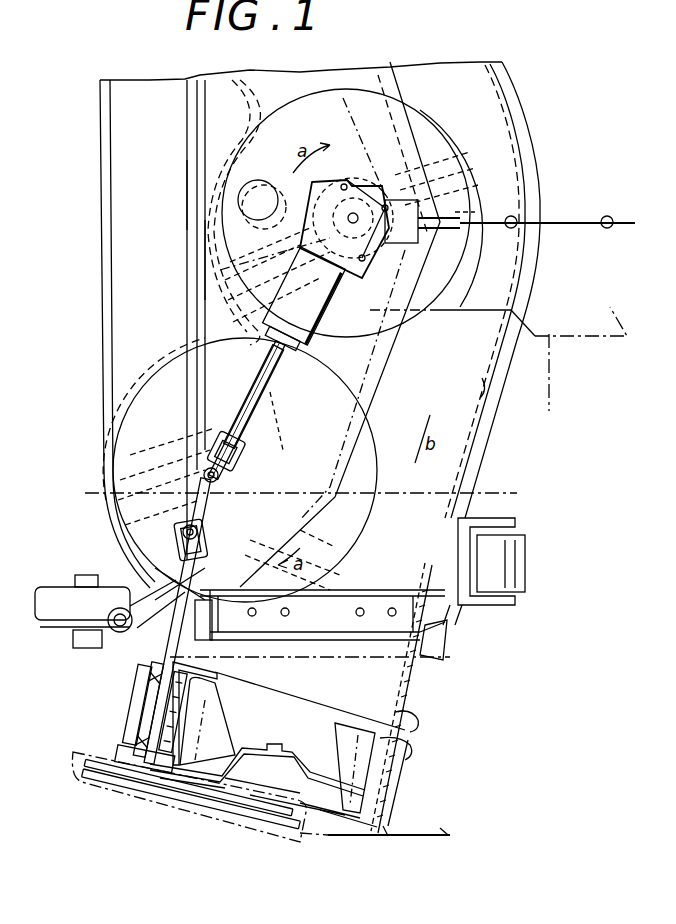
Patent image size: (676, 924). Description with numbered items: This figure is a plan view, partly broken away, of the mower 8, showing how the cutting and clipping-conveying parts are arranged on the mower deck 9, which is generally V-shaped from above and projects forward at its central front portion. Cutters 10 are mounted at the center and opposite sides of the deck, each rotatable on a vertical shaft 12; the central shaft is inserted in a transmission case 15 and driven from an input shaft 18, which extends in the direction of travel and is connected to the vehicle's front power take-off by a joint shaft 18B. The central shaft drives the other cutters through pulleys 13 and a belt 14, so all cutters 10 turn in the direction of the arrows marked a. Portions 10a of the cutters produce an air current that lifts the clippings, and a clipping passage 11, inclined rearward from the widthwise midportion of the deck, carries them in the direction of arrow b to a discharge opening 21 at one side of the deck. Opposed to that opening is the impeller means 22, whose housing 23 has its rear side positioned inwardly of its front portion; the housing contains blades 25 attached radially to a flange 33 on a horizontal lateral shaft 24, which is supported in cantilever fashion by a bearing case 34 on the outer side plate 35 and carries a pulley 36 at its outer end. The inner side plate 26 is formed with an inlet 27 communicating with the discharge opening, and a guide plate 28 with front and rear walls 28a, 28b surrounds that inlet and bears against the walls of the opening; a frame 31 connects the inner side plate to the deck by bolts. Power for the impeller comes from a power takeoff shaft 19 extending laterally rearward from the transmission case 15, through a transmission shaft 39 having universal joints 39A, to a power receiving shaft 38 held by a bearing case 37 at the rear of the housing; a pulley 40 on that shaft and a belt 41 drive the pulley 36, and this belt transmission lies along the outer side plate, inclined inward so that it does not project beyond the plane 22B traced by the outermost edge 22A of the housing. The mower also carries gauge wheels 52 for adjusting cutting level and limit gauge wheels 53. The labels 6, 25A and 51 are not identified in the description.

The center line of seat 6 is at (528, 478).
The mower 8 is at (522, 380).
The mower deck 9 is at (342, 103).
The cutters 10 is at (483, 205).
The portions of cutters 10a is at (149, 393).
The clipping passage 11 is at (490, 398).
The vertical shaft 12 is at (370, 200).
The pulleys 13 is at (366, 268).
The belt 14 is at (213, 258).
The transmission case 15 is at (345, 186).
The input shaft 18 is at (452, 232).
The joint shaft 18B is at (578, 215).
The power takeoff shaft 19 is at (272, 370).
The discharge opening 21 is at (380, 655).
The impeller means 22 is at (352, 832).
The outermost edge of housing 22A is at (377, 838).
The plane of passage 22B is at (443, 838).
The housing 23 is at (388, 773).
The horizontal lateral shaft 24 is at (222, 808).
The blades 25 is at (228, 742).
The flange 25A is at (395, 745).
The inner side plate 26 is at (412, 725).
The inlet 27 is at (346, 698).
The guide plate 28 is at (398, 704).
The front wall of guide plate 28a is at (425, 645).
The rear wall of guide plate 28b is at (224, 661).
The frame 31 is at (337, 595).
The flange 33 is at (197, 805).
The bearing case 34 is at (278, 830).
The outer side plate 35 is at (322, 832).
The pulley 36 is at (252, 817).
The bearing case 37 is at (122, 723).
The power receiving shaft 38 is at (148, 695).
The transmission shaft 39 is at (204, 479).
The universal joints 39A is at (216, 440).
The pulley 40 is at (177, 818).
The belt 41 is at (185, 820).
The door 51 is at (212, 196).
The gauge wheels 52 is at (58, 597).
The limit gauge wheels 53 is at (520, 570).